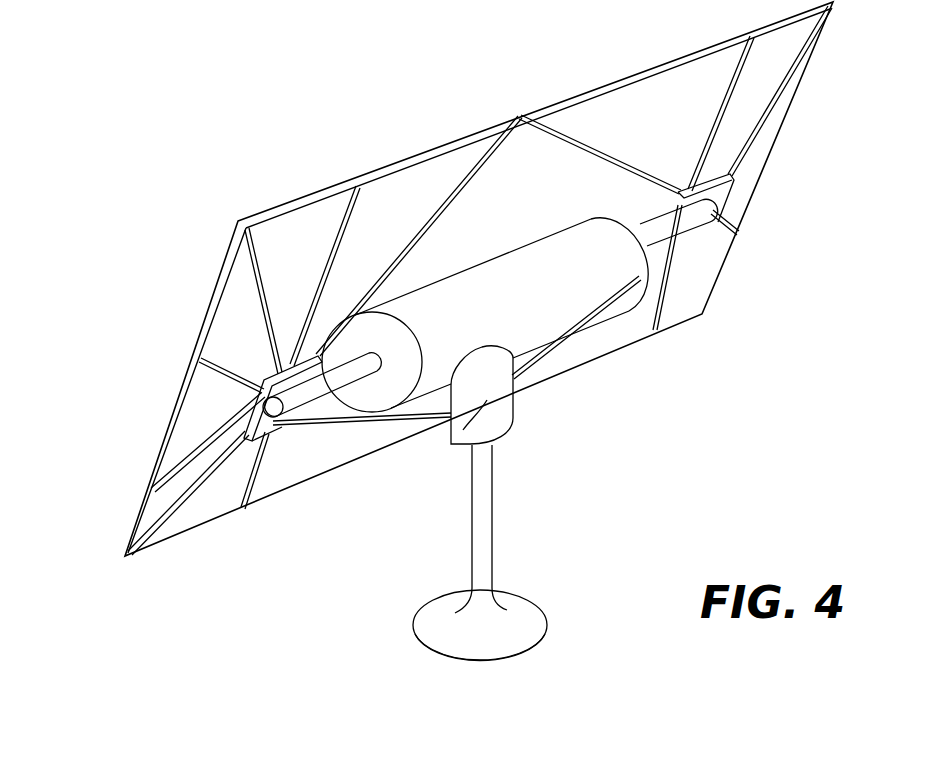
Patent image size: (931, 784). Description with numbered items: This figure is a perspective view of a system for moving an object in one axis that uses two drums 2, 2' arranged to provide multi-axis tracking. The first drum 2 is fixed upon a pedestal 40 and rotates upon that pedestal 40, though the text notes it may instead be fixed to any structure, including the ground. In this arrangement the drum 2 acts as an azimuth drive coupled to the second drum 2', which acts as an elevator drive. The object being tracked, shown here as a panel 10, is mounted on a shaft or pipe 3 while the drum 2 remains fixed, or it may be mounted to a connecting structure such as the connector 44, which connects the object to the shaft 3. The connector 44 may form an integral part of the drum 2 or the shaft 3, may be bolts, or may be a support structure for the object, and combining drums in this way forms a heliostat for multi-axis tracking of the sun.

The solar panel assembly 10 is at (537, 38).
The shaft 3 is at (313, 386).
The connector 44 is at (712, 194).
The drum 2' is at (490, 308).
The drum 2 is at (452, 419).
The pedestal 40 is at (487, 503).